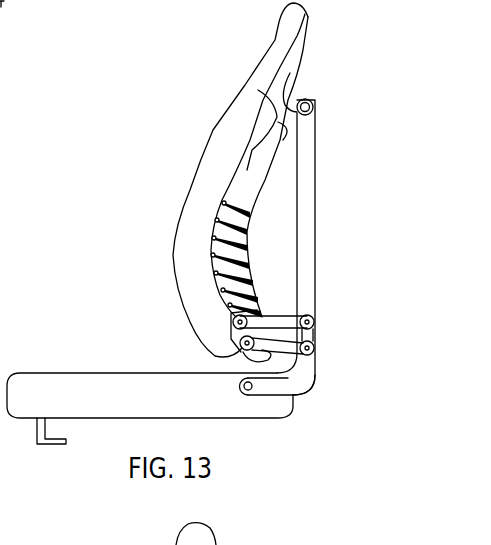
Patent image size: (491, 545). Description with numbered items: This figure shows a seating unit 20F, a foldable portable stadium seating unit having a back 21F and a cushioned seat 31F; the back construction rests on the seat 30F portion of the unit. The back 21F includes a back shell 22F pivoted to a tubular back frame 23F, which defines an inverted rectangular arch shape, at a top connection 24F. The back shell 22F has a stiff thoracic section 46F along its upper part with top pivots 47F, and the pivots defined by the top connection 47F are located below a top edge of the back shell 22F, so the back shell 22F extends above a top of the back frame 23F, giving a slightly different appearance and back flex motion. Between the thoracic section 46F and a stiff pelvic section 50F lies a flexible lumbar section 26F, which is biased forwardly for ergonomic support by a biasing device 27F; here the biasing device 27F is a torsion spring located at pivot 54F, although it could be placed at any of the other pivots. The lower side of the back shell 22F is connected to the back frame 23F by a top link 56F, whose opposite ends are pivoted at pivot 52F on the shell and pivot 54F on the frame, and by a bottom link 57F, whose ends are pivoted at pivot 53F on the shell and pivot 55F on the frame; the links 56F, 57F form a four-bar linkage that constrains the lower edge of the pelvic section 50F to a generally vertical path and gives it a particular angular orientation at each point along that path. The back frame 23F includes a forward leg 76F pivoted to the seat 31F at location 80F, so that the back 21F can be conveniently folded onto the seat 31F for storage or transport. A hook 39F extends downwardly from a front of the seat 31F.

The seating unit 20F is at (206, 50).
The back 21F is at (336, 83).
The back shell 22F is at (255, 135).
The back frame 23F is at (316, 128).
The top connection 24F is at (313, 97).
The lumbar section 26F is at (247, 245).
The biasing device 27F is at (312, 313).
The seat 30F is at (90, 468).
The cushioned seat 31F is at (87, 372).
The hook 39F is at (53, 453).
The thoracic section 46F is at (287, 112).
The top pivots 47F is at (251, 96).
The pelvic section 50F is at (232, 340).
The pivot 52F is at (232, 318).
The pivot 53F is at (238, 352).
The pivot 54F is at (314, 323).
The pivot 55F is at (313, 350).
The top link 56F is at (268, 318).
The bottom link 57F is at (297, 372).
The forward leg 76F is at (274, 385).
The pivot location 80F is at (241, 398).